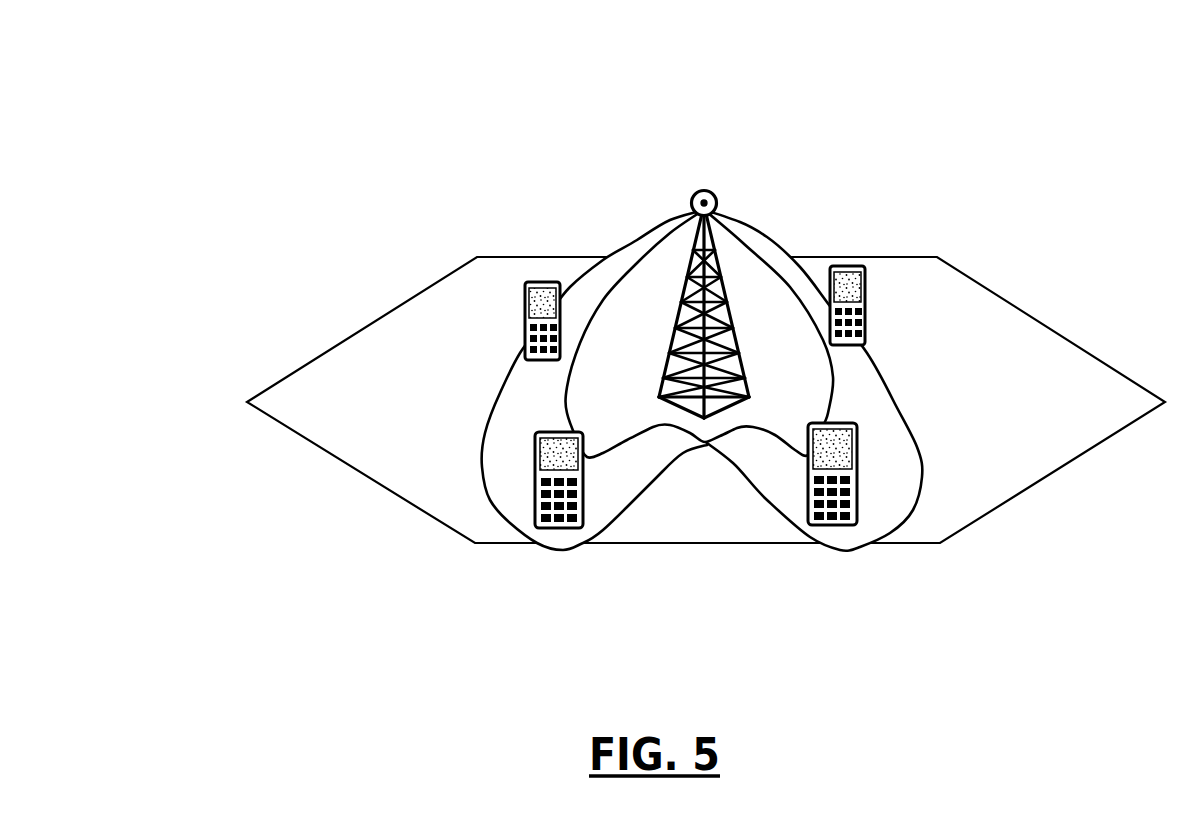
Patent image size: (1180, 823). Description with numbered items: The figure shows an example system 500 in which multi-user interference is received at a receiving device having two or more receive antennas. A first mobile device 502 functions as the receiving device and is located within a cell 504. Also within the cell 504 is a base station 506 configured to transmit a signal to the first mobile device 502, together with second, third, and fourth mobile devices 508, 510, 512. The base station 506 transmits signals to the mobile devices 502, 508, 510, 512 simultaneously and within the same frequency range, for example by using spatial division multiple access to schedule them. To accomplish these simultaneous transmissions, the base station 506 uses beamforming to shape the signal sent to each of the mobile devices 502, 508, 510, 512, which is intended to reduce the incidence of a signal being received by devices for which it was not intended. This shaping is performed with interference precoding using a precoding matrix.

The system 500 is at (96, 76).
The first mobile device 502 is at (540, 437).
The cell 504 is at (312, 382).
The base station 506 is at (696, 191).
The second mobile device 508 is at (853, 450).
The third mobile device 510 is at (546, 306).
The fourth mobile device 512 is at (852, 290).